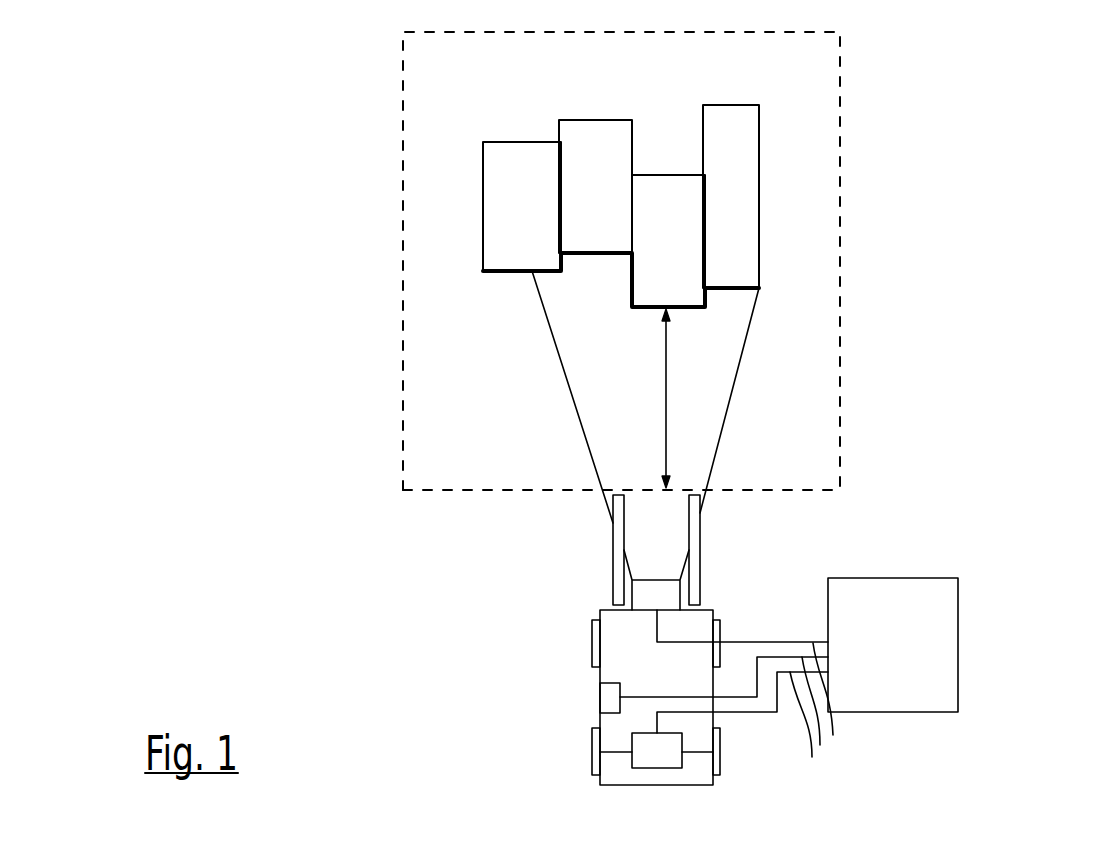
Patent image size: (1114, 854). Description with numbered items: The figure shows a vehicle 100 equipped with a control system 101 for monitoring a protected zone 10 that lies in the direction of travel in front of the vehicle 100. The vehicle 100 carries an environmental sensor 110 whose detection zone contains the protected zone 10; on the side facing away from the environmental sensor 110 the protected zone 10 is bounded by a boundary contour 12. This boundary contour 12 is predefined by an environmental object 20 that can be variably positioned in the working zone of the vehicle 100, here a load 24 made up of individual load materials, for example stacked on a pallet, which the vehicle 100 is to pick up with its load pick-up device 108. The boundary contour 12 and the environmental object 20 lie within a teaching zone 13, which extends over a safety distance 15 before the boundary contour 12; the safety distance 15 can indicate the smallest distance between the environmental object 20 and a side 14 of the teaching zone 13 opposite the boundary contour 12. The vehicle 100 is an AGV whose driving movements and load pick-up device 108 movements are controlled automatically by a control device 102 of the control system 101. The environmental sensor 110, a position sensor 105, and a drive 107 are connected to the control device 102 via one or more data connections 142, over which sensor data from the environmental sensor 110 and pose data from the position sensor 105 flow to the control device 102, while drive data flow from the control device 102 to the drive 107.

The protected zone 10 is at (597, 413).
The boundary contour 12 is at (732, 282).
The teaching zone 13 is at (812, 373).
The side of the teaching zone 14 is at (730, 478).
The safety distance 15 is at (666, 412).
The environmental object 20 is at (703, 203).
The load 24 is at (621, 206).
The vehicle 100 is at (688, 785).
The control system 101 is at (966, 505).
The control device 102 is at (893, 645).
The position sensor 105 is at (600, 700).
The drive 107 is at (656, 750).
The load pick-up device 108 is at (700, 537).
The environmental sensor 110 is at (630, 594).
The data connections 142 is at (739, 705).